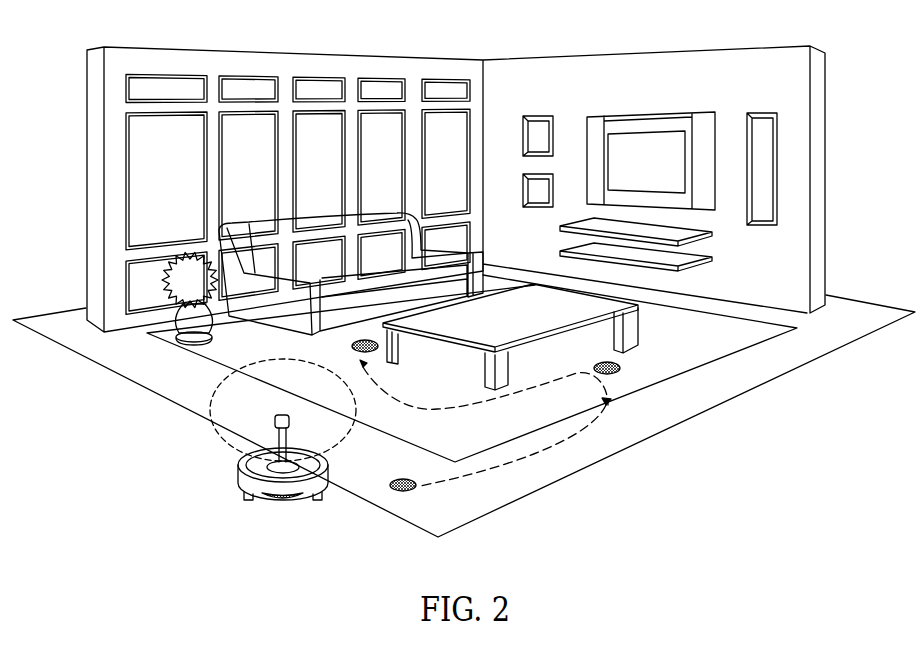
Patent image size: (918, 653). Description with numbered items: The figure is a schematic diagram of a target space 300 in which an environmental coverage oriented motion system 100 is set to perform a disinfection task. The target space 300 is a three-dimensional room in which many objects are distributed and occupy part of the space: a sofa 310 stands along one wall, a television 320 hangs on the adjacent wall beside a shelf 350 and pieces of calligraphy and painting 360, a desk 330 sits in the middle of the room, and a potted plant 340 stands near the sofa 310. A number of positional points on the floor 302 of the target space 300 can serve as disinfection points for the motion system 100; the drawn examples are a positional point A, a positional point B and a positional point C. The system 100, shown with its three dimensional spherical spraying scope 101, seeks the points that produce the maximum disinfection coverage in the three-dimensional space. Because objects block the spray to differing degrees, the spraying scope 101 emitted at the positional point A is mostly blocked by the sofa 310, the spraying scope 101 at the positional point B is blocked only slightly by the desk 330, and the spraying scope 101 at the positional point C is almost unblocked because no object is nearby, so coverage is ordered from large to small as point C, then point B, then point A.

The environmental coverage oriented motion system 100 is at (283, 474).
The three dimensional spherical spraying scope 101 is at (269, 410).
The target space 300 is at (694, 470).
The floor 302 is at (472, 368).
The sofa 310 is at (351, 274).
The television 320 is at (651, 161).
The desk 330 is at (510, 337).
The potted plant 340 is at (190, 298).
The shelf 350 is at (655, 244).
The calligraphy and painting 360 is at (650, 157).
The positional point A is at (365, 336).
The positional point B is at (607, 358).
The positional point C is at (403, 474).